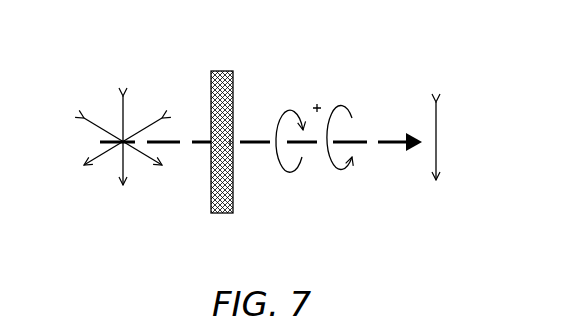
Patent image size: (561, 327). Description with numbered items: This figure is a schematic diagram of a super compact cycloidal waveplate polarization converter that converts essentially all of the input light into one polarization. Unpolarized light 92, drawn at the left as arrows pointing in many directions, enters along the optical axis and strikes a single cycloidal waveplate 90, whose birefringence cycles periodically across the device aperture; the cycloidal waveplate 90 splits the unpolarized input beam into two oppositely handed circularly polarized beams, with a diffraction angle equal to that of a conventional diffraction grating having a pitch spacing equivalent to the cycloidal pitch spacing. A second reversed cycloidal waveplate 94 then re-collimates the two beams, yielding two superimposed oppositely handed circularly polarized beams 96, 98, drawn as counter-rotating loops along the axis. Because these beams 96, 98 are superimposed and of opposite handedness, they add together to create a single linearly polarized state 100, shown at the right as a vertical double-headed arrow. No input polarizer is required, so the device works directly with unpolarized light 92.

The cycloidal waveplate 90 is at (210, 102).
The unpolarized light 92 is at (106, 88).
The second reversed cycloidal waveplate 94 is at (235, 105).
The circularly polarized beam 96 is at (289, 112).
The circularly polarized beam 98 is at (342, 172).
The linearly polarized state 100 is at (471, 91).